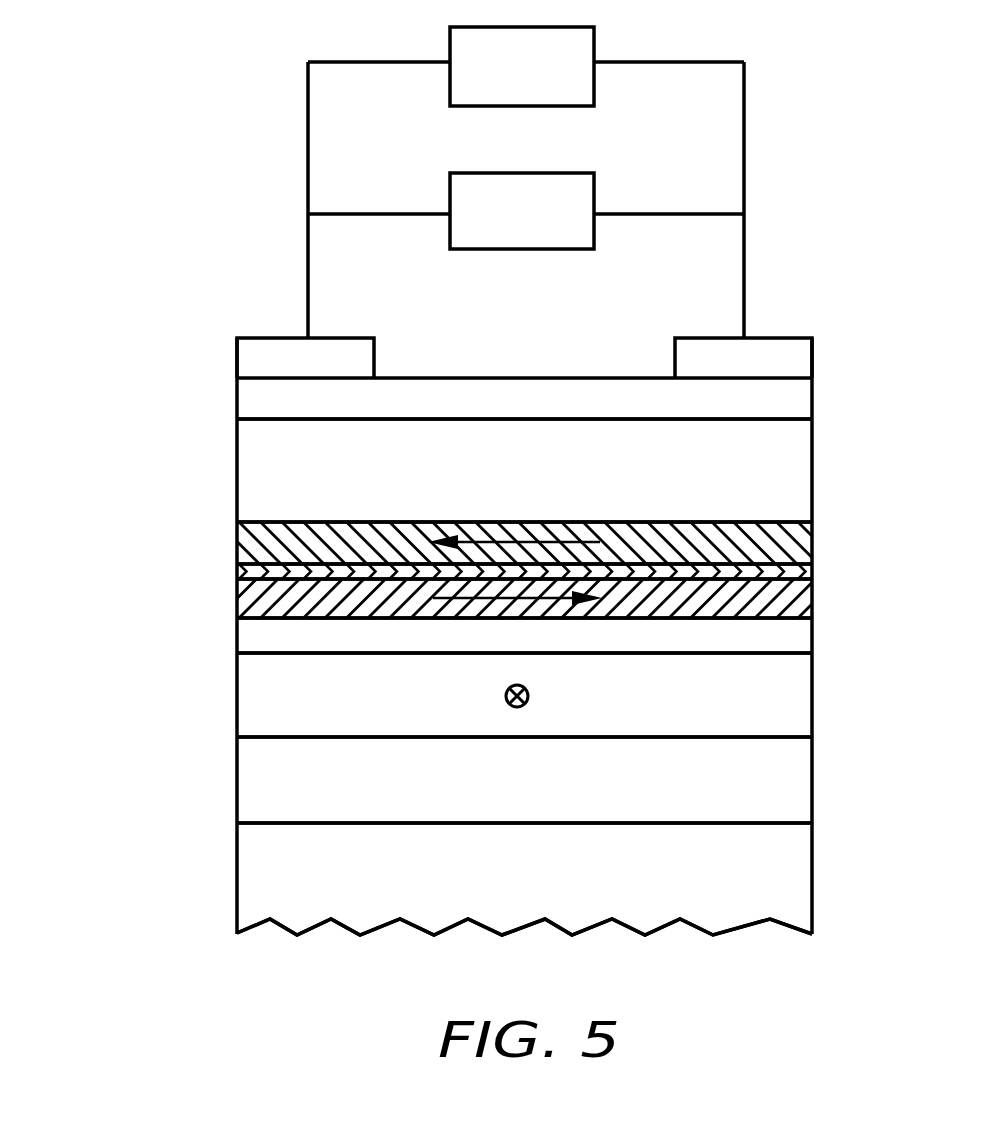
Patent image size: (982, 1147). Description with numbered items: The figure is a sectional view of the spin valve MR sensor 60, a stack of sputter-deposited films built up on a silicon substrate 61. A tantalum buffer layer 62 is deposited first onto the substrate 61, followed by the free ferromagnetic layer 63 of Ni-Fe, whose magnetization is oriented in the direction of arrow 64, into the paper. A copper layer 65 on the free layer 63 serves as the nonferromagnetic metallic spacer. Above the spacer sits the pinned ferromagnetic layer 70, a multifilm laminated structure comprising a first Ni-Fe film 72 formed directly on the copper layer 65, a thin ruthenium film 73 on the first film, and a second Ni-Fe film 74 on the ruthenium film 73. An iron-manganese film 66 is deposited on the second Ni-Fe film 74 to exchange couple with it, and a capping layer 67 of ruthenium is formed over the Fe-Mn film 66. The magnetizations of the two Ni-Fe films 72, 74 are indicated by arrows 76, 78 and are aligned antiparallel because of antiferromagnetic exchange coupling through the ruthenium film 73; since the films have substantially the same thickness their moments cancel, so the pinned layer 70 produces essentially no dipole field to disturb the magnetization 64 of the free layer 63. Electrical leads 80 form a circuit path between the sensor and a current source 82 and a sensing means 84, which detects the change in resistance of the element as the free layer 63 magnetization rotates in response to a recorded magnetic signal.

The spin valve MR sensor 60 is at (100, 722).
The substrate 61 is at (792, 865).
The buffer layer 62 is at (792, 781).
The free ferromagnetic layer 63 is at (792, 701).
The arrow 64 is at (504, 693).
The copper layer 65 is at (792, 640).
The iron-manganese film 66 is at (792, 460).
The capping layer 67 is at (792, 403).
The pinned ferromagnetic layer 70 is at (520, 571).
The first Ni-Fe film 72 is at (792, 603).
The ruthenium film 73 is at (792, 576).
The second Ni-Fe film 74 is at (792, 548).
The arrow 76 is at (460, 603).
The arrow 78 is at (481, 540).
The electrical leads 80 is at (262, 357).
The current source 82 is at (596, 192).
The sensing means 84 is at (596, 40).